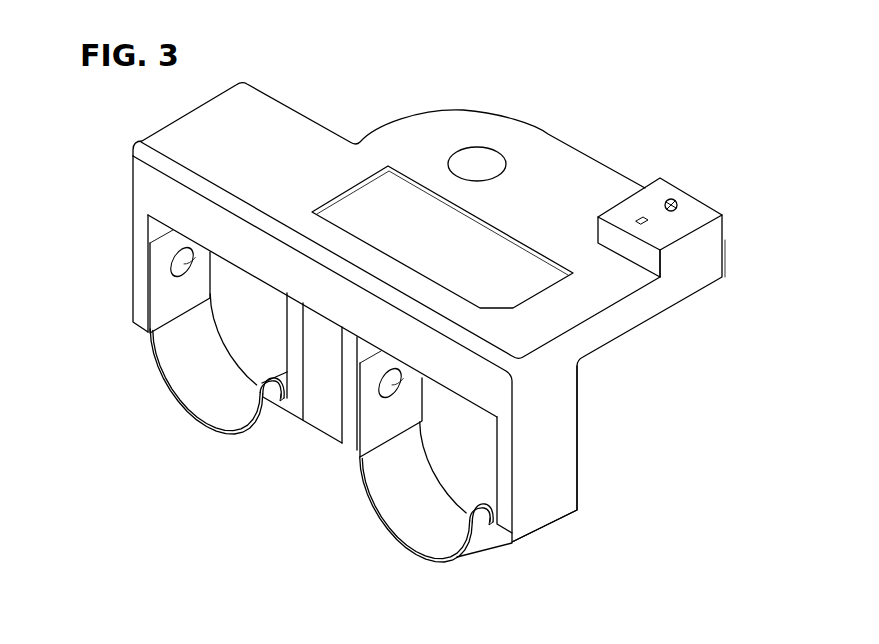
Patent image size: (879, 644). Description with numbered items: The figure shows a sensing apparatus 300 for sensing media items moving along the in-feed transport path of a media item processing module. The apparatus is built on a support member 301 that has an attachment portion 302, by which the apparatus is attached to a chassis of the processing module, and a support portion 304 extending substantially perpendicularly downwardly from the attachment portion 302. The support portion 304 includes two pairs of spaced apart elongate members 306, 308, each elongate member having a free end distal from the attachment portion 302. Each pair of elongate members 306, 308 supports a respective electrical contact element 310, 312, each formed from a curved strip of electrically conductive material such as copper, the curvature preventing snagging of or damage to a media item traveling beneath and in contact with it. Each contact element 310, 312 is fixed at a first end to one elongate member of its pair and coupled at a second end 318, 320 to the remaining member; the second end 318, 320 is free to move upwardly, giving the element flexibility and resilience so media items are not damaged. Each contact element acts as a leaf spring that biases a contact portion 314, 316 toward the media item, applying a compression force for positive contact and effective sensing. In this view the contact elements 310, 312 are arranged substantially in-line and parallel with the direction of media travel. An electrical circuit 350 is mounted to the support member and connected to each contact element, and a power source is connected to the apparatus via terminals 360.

The sensing apparatus 300 is at (622, 52).
The support member 301 is at (324, 70).
The attachment portion 302 is at (542, 155).
The support portion 304 is at (132, 168).
The elongate member 306 is at (95, 237).
The elongate member 308 is at (631, 445).
The electrical contact element 310 is at (162, 378).
The electrical contact element 312 is at (453, 560).
The contact portion 314 is at (217, 440).
The contact portion 316 is at (427, 560).
The second end 318 is at (271, 403).
The second end 320 is at (494, 498).
The electrical circuit 350 is at (417, 220).
The terminals 360 is at (727, 228).